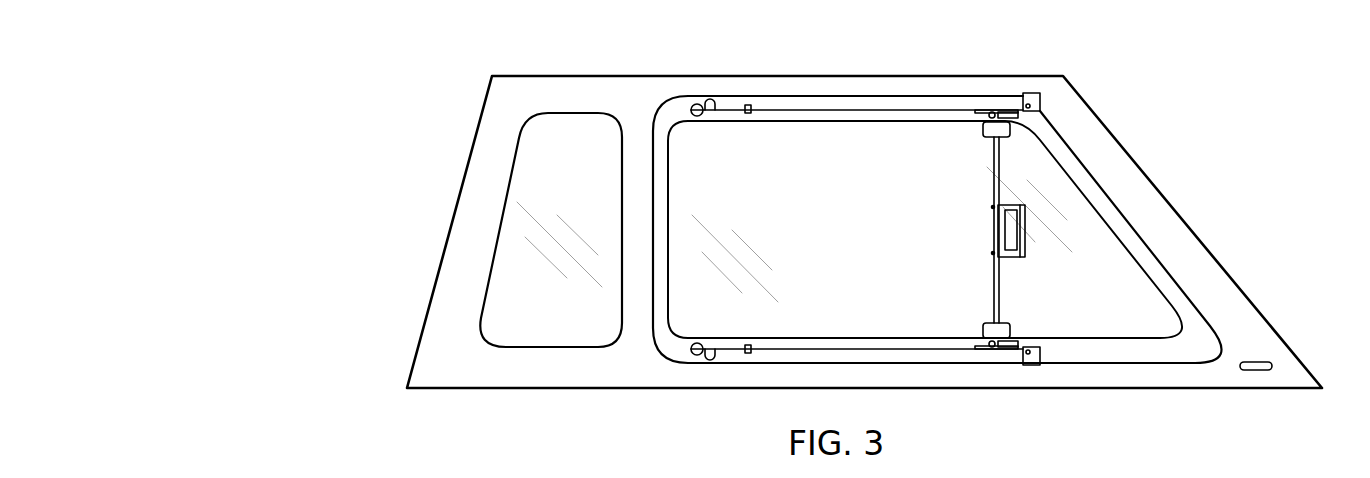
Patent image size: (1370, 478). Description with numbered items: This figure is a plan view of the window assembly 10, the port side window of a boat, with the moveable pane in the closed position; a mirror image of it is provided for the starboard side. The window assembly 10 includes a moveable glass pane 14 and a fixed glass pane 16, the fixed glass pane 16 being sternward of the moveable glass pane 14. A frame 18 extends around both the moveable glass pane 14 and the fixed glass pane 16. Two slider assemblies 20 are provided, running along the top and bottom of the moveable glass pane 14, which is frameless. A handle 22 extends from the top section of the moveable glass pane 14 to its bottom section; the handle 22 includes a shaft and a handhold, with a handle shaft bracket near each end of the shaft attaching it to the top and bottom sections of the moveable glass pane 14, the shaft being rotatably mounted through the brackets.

The window assembly 10 is at (383, 152).
The moveable glass pane 14 is at (865, 160).
The fixed glass pane 16 is at (510, 262).
The frame 18 is at (427, 317).
The slider assemblies 20 is at (948, 78).
The handle 22 is at (1030, 274).